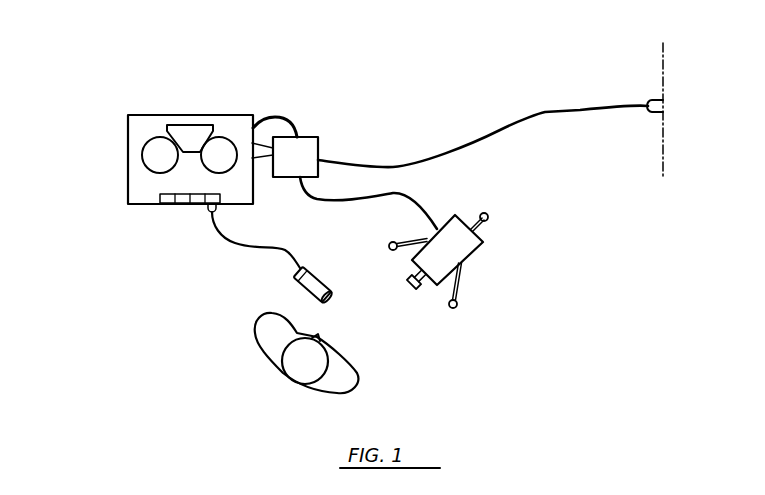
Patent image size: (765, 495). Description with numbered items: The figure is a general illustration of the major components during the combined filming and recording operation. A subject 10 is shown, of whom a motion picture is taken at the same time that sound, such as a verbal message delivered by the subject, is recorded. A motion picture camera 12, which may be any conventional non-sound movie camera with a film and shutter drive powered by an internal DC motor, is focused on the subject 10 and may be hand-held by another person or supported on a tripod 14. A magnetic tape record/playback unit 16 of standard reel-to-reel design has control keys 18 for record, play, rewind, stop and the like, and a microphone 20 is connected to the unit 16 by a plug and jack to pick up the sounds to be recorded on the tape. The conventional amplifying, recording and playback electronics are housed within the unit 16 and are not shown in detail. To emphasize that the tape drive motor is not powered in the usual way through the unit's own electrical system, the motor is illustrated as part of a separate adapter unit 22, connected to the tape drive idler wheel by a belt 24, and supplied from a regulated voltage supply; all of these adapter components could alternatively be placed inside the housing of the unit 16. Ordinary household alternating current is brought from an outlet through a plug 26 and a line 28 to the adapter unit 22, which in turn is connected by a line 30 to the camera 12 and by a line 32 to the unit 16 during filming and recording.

The subject 10 is at (270, 352).
The motion picture camera 12 is at (483, 247).
The tripod 14 is at (458, 293).
The magnetic tape record/playback unit 16 is at (128, 180).
The control keys 18 is at (196, 206).
The microphone 20 is at (300, 287).
The adapter unit 22 is at (318, 137).
The belt 24 is at (262, 160).
The plug 26 is at (655, 115).
The line 28 is at (537, 113).
The line 30 is at (418, 203).
The line 32 is at (277, 117).